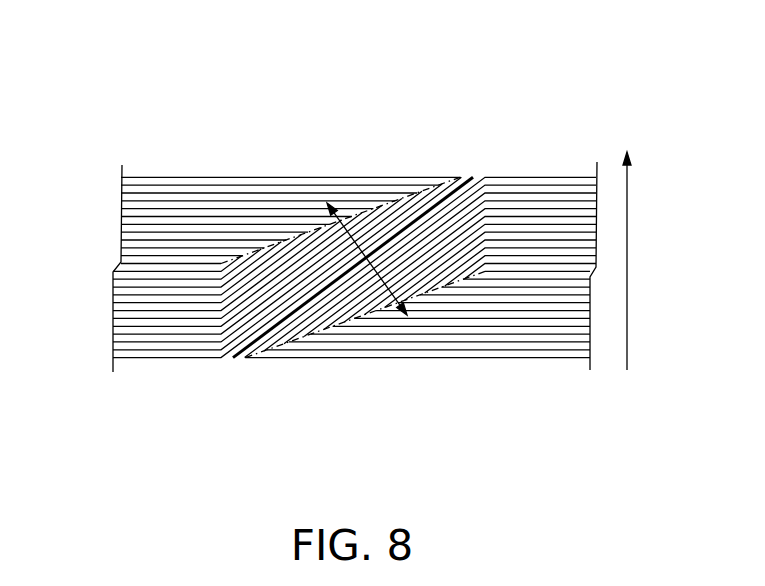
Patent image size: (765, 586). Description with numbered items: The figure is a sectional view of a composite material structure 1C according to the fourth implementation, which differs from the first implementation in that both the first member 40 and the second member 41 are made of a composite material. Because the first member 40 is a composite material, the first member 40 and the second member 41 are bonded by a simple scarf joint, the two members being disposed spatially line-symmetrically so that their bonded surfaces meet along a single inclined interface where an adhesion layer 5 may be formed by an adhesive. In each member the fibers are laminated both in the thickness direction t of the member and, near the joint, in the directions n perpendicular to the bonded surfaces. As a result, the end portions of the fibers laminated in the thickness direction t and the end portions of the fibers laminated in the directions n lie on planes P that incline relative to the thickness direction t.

The composite material structure 1C is at (374, 217).
The first member 40 is at (261, 178).
The second member 41 is at (548, 178).
The adhesion layer 5 is at (472, 176).
The directions perpendicular to the bonded surfaces n is at (345, 229).
The planes P is at (381, 204).
The thickness direction t is at (627, 249).